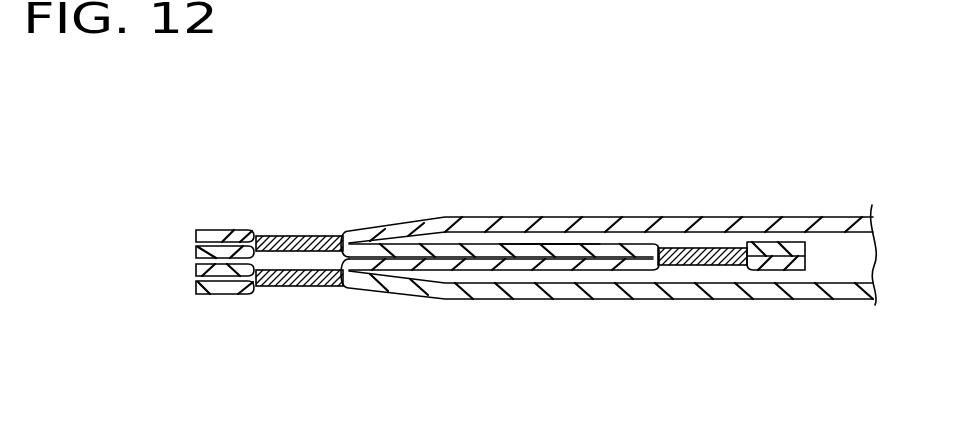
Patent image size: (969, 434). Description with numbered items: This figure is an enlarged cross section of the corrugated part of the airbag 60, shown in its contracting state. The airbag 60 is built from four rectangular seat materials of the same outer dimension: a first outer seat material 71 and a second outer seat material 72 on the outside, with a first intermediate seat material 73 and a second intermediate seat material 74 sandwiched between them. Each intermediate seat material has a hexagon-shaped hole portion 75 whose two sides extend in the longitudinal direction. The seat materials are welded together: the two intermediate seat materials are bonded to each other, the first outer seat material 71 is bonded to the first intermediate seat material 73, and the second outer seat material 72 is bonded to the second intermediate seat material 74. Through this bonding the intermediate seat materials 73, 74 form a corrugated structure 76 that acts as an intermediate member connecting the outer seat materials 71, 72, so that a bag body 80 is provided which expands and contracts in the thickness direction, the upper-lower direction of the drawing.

The airbag 60 is at (264, 120).
The bag body 80 is at (646, 218).
The first outer seat material 71 is at (785, 227).
The second outer seat material 72 is at (760, 288).
The first intermediate seat material 73 is at (490, 250).
The second intermediate seat material 74 is at (476, 272).
The hole portion 75 is at (806, 247).
The corrugated structure 76 is at (543, 244).